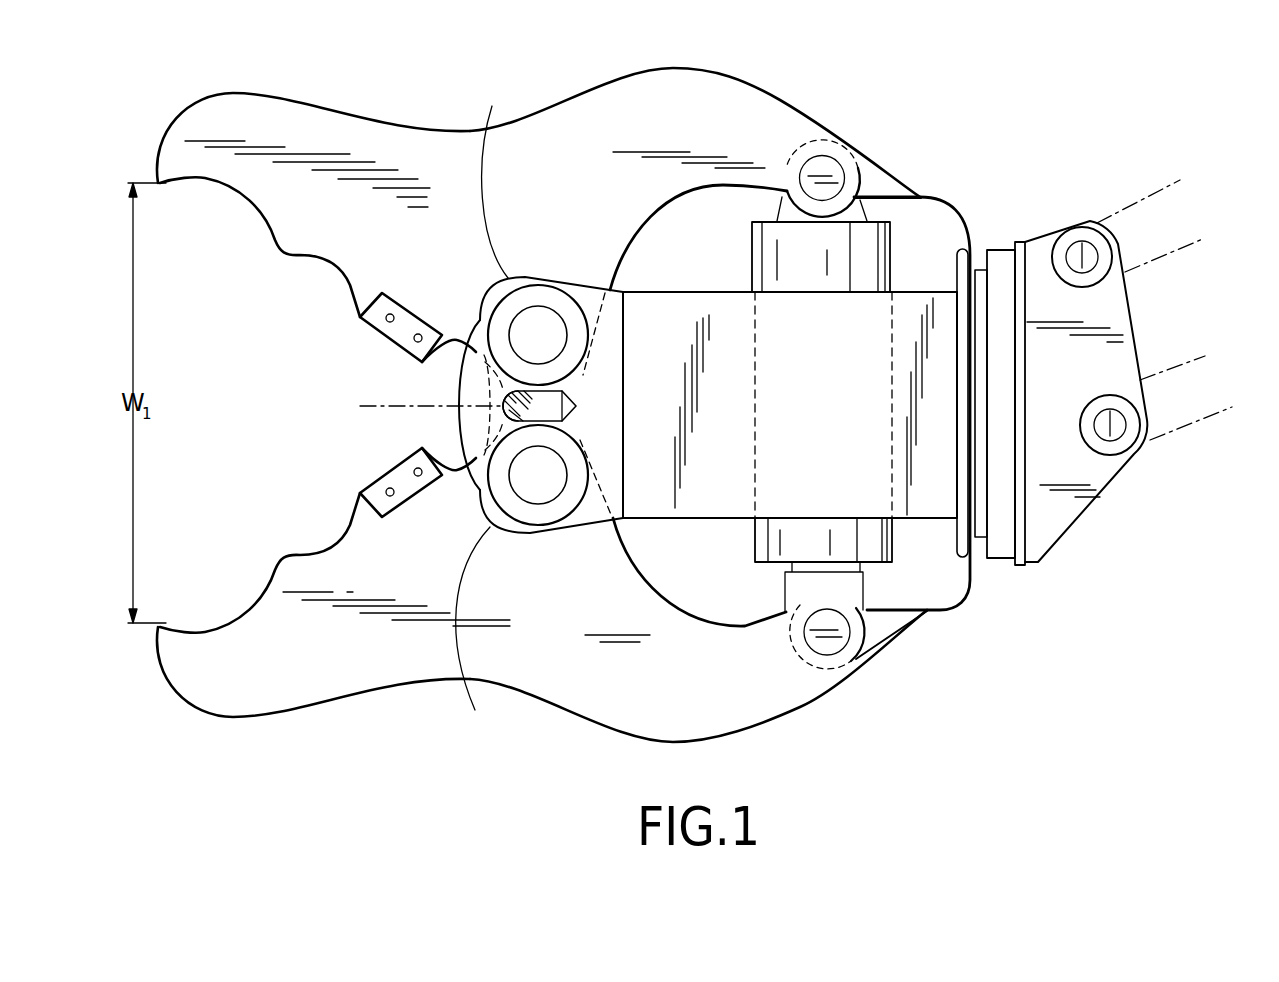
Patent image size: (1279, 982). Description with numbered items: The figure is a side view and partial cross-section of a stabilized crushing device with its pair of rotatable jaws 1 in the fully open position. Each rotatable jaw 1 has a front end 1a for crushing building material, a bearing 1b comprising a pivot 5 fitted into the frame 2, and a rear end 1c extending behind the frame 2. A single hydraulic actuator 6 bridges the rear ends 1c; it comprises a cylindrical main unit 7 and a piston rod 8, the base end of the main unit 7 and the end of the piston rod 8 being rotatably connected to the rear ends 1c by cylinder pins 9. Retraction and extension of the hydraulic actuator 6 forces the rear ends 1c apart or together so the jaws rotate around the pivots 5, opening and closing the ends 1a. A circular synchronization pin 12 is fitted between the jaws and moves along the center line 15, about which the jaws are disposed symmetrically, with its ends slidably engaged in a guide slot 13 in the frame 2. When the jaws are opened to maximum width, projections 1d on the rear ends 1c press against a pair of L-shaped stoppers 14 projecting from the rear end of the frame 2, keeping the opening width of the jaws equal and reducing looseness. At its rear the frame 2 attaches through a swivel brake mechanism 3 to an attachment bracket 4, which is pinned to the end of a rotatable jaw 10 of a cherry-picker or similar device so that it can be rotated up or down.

The rotatable jaw 1 is at (552, 400).
The end of rotatable jaw 1a is at (262, 102).
The bearing 1b is at (487, 410).
The rear end 1c is at (728, 78).
The projection 1d is at (873, 172).
The frame 2 is at (680, 310).
The swivel brake mechanism 3 is at (978, 282).
The attachment bracket 4 is at (1037, 250).
The pivot 5 is at (543, 312).
The hydraulic actuator 6 is at (738, 262).
The cylindrical main unit 7 is at (757, 543).
The piston rod 8 is at (799, 568).
The cylinder pin 9 is at (822, 158).
The rotatable jaw of cherry-picker 10 is at (1165, 438).
The synchronization pin 12 is at (487, 437).
The guide slot 13 is at (472, 360).
The stopper 14 is at (945, 206).
The center line 15 is at (413, 404).